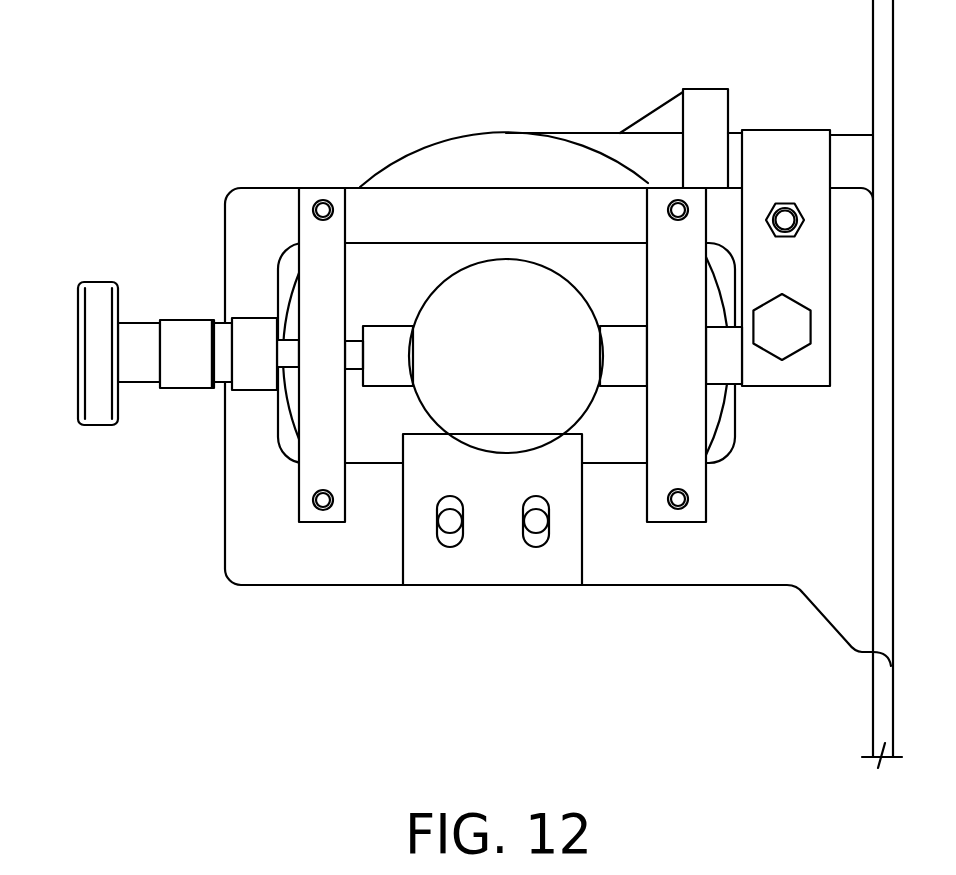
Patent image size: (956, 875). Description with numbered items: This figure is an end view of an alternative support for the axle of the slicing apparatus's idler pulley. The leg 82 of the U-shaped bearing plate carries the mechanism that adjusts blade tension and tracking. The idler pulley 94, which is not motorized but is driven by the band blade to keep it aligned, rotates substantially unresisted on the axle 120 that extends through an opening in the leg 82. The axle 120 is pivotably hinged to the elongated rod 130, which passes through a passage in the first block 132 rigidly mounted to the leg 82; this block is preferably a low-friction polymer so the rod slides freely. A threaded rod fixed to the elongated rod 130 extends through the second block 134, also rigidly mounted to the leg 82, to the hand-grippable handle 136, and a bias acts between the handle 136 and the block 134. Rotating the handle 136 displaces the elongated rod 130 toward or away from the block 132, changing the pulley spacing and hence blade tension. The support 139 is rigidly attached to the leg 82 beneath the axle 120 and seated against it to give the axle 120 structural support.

The first leg 82 is at (252, 555).
The idler pulley 94 is at (438, 168).
The axle 120 is at (503, 268).
The elongated rod 130 is at (630, 353).
The first block 132 is at (683, 257).
The second block 134 is at (310, 197).
The handle 136 is at (97, 418).
The support 139 is at (425, 572).